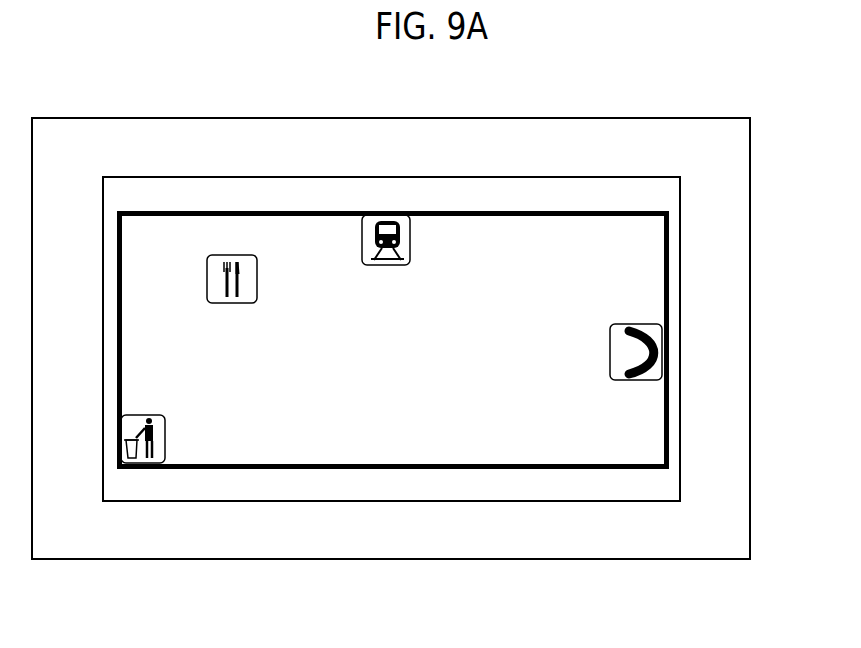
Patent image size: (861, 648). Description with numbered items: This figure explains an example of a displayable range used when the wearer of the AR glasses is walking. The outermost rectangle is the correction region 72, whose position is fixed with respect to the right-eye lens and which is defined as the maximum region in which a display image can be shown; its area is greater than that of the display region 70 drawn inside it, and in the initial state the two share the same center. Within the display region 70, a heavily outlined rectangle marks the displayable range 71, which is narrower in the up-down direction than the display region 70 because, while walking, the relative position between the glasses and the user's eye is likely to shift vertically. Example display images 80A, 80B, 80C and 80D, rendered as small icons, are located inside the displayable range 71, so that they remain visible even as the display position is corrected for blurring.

The display region 70 is at (585, 190).
The displayable range 71 is at (508, 442).
The correction region 72 is at (733, 222).
The display image 80A is at (144, 467).
The display image 80B is at (670, 350).
The display image 80C is at (382, 210).
The display image 80D is at (230, 255).